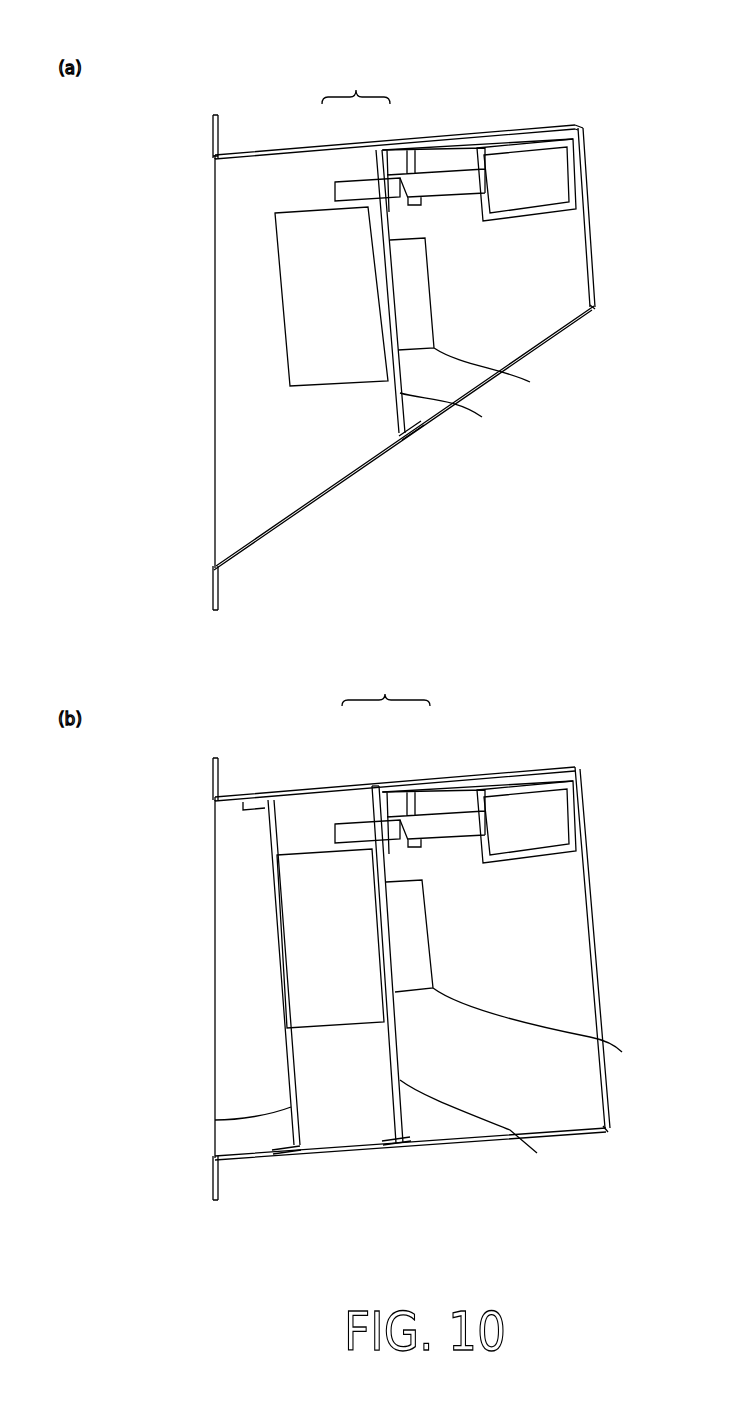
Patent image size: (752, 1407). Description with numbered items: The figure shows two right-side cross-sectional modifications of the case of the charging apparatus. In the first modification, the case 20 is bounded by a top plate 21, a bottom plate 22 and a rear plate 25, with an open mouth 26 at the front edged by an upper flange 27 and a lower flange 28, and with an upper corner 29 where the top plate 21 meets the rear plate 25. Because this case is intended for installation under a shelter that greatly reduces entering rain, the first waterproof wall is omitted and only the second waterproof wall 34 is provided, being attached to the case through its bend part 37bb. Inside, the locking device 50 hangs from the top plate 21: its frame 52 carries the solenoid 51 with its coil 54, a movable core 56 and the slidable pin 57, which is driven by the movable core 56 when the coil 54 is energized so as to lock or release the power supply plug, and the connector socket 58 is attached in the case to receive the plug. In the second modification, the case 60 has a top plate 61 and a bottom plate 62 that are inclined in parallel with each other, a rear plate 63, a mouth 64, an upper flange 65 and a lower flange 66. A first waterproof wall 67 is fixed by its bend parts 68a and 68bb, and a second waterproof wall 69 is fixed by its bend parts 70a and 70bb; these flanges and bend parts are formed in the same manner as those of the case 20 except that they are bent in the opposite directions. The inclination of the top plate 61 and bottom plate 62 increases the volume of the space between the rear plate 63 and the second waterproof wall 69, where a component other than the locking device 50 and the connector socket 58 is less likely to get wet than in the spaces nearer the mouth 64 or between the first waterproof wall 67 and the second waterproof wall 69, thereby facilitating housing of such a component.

The case 20 is at (595, 310).
The top plate 21 is at (296, 152).
The bottom plate 22 is at (286, 525).
The rear plate 25 is at (590, 260).
The mouth 26 is at (215, 446).
The upper flange 27 is at (213, 122).
The lower flange 28 is at (215, 590).
The upper corner 29 is at (578, 128).
The second waterproof wall 34 is at (482, 417).
The bend part 37bb is at (413, 438).
The locking device 50 is at (376, 387).
The solenoid 51 is at (383, 160).
The frame 52 is at (512, 141).
The coil 54 is at (563, 188).
The movable core 56 is at (453, 180).
The slidable pin 57 is at (350, 188).
The connector socket 58 is at (530, 382).
The case 60 is at (606, 1132).
The top plate 61 is at (302, 790).
The bottom plate 62 is at (470, 1140).
The rear plate 63 is at (594, 965).
The mouth 64 is at (215, 1010).
The upper flange 65 is at (213, 757).
The lower flange 66 is at (215, 1195).
The first waterproof wall 67 is at (290, 1106).
The bend part 68a is at (260, 800).
The bend part 68bb is at (288, 1150).
The second waterproof wall 69 is at (479, 1130).
The bend part 70a is at (365, 790).
The bend part 70bb is at (398, 1145).